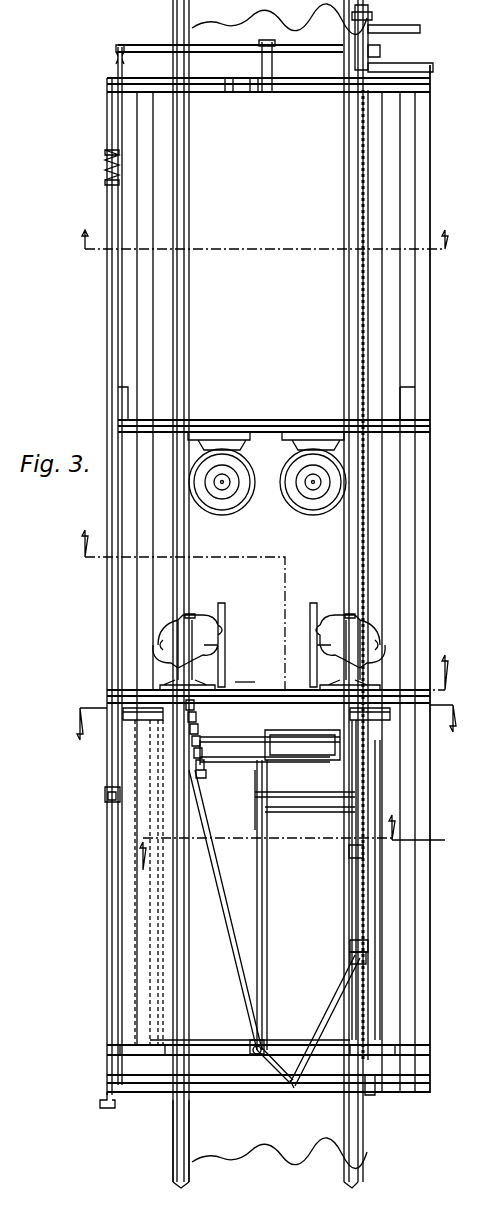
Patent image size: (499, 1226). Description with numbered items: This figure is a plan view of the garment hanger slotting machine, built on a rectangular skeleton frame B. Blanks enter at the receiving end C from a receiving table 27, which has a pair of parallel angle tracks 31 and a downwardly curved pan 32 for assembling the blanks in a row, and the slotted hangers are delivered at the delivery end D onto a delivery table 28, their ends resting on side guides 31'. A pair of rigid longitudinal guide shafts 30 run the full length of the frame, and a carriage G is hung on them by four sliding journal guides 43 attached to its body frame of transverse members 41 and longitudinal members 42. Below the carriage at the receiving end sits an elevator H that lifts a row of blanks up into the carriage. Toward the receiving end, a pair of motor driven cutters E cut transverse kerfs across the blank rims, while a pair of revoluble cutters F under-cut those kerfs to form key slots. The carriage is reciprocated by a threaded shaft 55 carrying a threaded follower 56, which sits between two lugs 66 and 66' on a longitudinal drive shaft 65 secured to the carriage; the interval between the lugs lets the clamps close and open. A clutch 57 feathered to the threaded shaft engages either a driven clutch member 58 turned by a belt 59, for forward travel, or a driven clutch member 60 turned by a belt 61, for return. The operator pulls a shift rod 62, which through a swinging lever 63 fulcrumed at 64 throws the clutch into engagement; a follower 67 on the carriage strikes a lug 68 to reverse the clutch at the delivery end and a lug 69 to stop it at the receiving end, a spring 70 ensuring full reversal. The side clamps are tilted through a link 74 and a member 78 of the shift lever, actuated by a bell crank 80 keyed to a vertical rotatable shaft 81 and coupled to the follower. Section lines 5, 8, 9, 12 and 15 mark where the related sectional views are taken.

The delivery table 28 is at (205, 36).
The receiving table 27 is at (205, 1157).
The pan 32 is at (332, 594).
The angle tracks 31 is at (265, 1141).
The side guides 31' is at (272, 575).
The guide shafts 30 is at (140, 332).
The delivery end D is at (270, 96).
The swinging lever 63 is at (238, 58).
The fulcrum 64 is at (258, 80).
The driven clutch member 58 is at (372, 18).
The belt 59 is at (420, 30).
The clutch 57 is at (380, 50).
The driven clutch member 60 is at (400, 64).
The belt 61 is at (420, 70).
The lug 68 is at (105, 164).
The spring 70 is at (105, 178).
The section line 9— 9 is at (267, 226).
The revoluble cutters F is at (218, 487).
The section line 8— 8 is at (264, 600).
The motor driven cutters E is at (214, 621).
The section line 12— 12 is at (250, 1132).
The sliding journal guides 43 is at (432, 702).
The section line 15— 15 is at (261, 721).
The longitudinal members 42 is at (395, 776).
The shift rod 62 is at (100, 1102).
The follower 67 is at (108, 795).
The lug 69 is at (110, 805).
The section line 5— 5 is at (258, 842).
The member of the shift lever 78 is at (236, 758).
The link 74 is at (287, 782).
The transverse members 41 is at (326, 730).
The elevator H is at (232, 905).
The carriage G is at (215, 1040).
The vertical rotatable shaft 81 is at (302, 1036).
The bell crank 80 is at (255, 1056).
The receiving end C is at (233, 1096).
The longitudinal drive shaft 65 is at (350, 806).
The lug 66 is at (324, 862).
The threaded shaft 55 is at (372, 900).
The threaded follower 56 is at (354, 942).
The lug 66' is at (323, 959).
The frame B is at (432, 476).